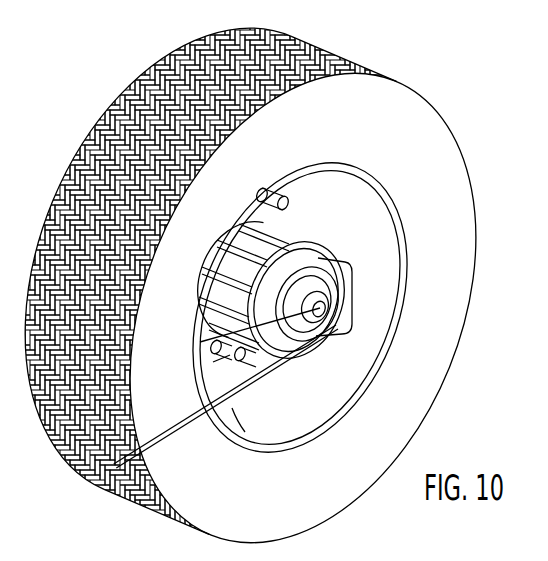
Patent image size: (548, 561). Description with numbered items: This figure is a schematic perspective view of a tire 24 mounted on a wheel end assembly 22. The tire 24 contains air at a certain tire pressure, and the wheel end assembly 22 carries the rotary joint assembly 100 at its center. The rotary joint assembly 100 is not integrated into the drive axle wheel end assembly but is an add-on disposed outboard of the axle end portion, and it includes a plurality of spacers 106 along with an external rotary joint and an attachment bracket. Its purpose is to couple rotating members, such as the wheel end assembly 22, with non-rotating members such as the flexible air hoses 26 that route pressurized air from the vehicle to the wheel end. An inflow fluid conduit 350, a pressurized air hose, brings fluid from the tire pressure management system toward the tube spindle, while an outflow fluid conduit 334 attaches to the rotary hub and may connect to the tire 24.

The wheel end assembly 22 is at (300, 243).
The tire 24 is at (348, 124).
The flexible air hose 26 is at (167, 447).
The rotary joint assembly 100 is at (320, 310).
The spacer 106 is at (322, 262).
The outflow fluid conduit 334 is at (213, 362).
The inflow fluid conduit 350 is at (232, 408).